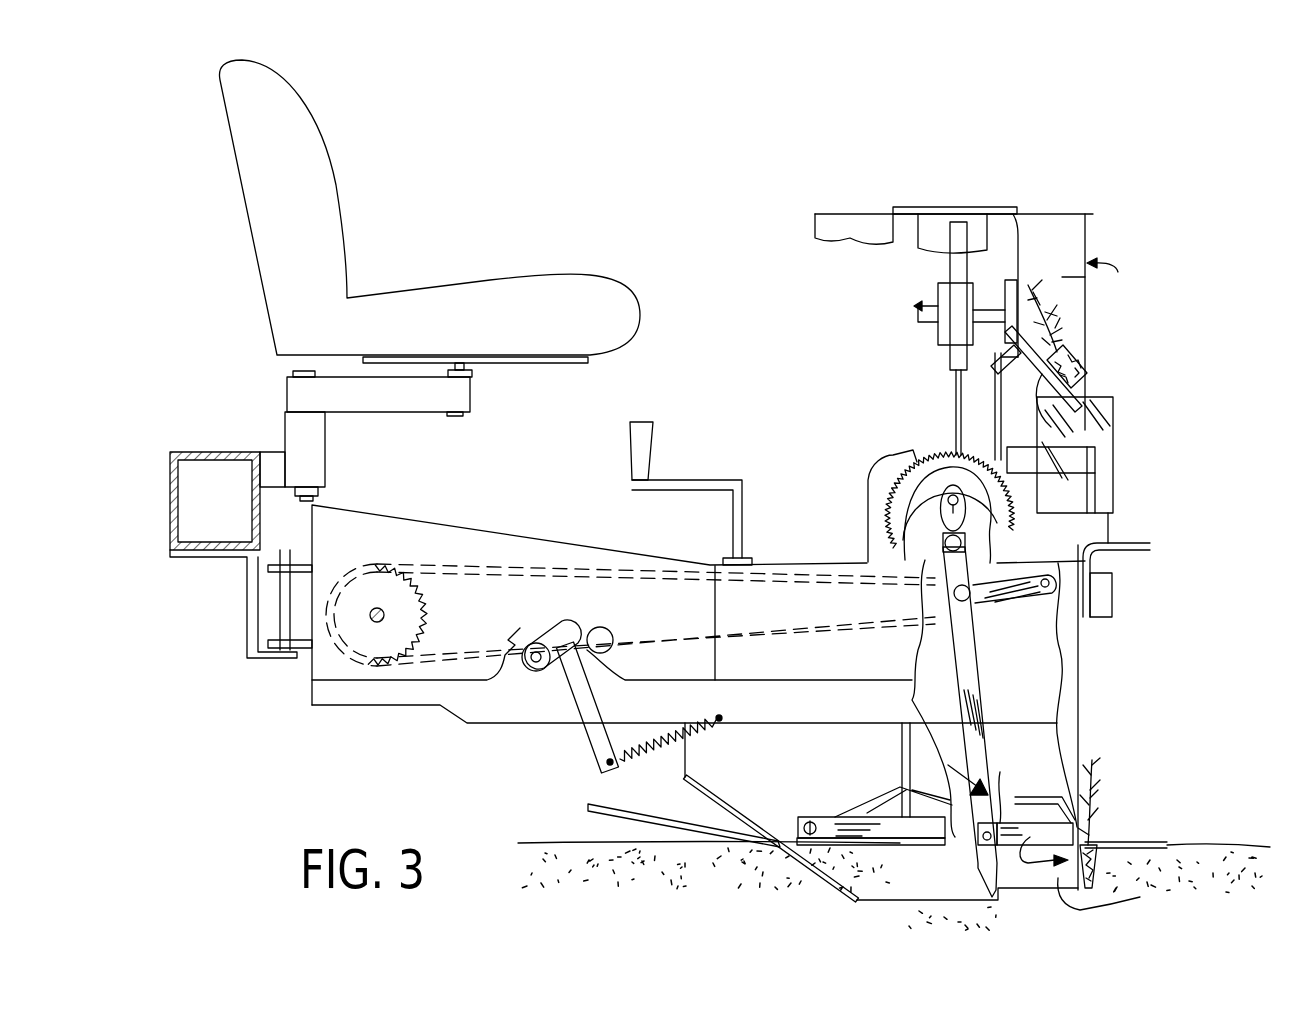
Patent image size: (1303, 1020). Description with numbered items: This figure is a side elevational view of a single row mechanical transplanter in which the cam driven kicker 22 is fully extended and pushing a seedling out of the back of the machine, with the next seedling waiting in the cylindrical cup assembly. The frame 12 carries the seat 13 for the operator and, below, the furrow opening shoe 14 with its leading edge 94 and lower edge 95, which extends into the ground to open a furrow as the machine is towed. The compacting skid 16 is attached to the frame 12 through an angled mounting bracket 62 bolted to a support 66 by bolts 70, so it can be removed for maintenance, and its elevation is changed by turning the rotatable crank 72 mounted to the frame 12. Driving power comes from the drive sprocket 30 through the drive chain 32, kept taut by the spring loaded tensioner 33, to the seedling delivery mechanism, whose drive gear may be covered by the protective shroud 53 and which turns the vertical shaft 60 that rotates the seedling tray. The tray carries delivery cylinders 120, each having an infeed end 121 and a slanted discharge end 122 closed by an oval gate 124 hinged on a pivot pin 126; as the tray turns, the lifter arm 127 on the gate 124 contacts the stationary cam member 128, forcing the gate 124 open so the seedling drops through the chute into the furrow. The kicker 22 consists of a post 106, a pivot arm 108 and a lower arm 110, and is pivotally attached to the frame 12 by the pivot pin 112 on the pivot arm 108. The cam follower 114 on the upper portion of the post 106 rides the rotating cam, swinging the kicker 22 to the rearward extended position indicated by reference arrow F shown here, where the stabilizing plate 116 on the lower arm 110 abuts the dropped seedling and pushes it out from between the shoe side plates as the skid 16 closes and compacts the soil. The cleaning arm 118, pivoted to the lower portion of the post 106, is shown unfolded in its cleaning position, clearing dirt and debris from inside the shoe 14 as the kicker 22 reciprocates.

The frame 12 is at (310, 705).
The seat 13 is at (495, 283).
The furrow opening shoe 14 is at (750, 782).
The compacting skid 16 is at (830, 845).
The kicker 22 is at (990, 665).
The drive sprocket 30 is at (432, 605).
The drive chain 32 is at (482, 563).
The spring loaded tensioner 33 is at (572, 700).
The protective shroud 53 is at (883, 550).
The vertical shaft 60 is at (950, 417).
The angled mounting bracket 62 is at (905, 825).
The support 66 is at (902, 740).
The bolt 70 is at (810, 821).
The rotatable crank 72 is at (692, 480).
The leading edge 94 is at (783, 850).
The lower edge 95 is at (875, 900).
The post 106 is at (977, 632).
The pivot arm 108 is at (1027, 600).
The lower arm 110 is at (1000, 772).
The pivot pin 112 is at (1050, 583).
The cam follower 114 is at (933, 550).
The stabilizing plate 116 is at (1093, 910).
The cleaning arm 118 is at (978, 868).
The delivery cylinder 120 is at (1085, 297).
The infeed end 121 is at (1092, 214).
The discharge end 122 is at (1085, 380).
The gate 124 is at (1083, 428).
The pivot pin 126 is at (1003, 332).
The lifter arm 127 is at (993, 388).
The stationary cam member 128 is at (1002, 352).
The rearward extended position F is at (1007, 843).